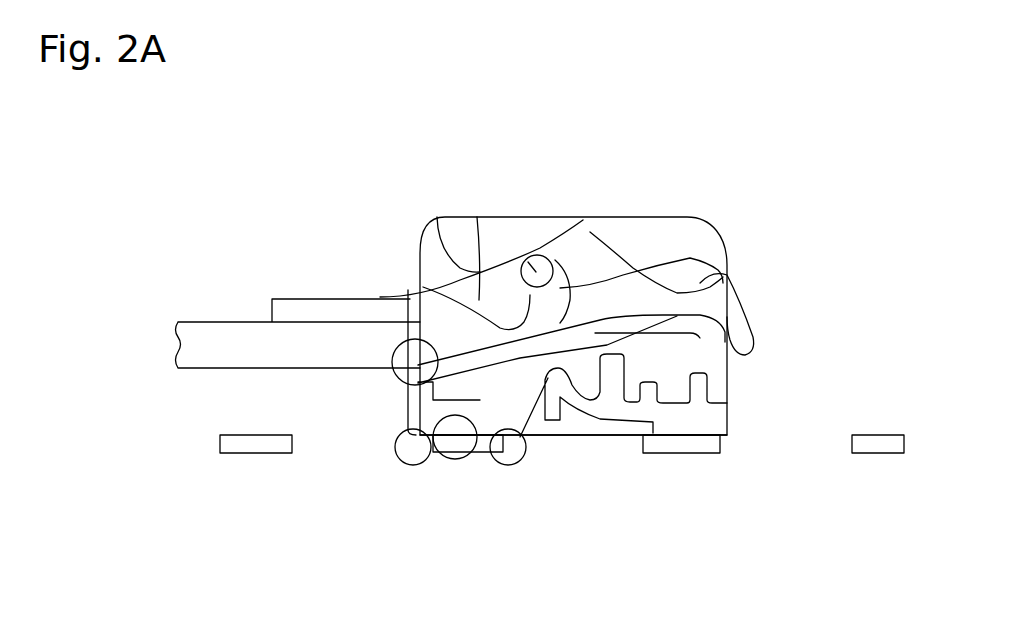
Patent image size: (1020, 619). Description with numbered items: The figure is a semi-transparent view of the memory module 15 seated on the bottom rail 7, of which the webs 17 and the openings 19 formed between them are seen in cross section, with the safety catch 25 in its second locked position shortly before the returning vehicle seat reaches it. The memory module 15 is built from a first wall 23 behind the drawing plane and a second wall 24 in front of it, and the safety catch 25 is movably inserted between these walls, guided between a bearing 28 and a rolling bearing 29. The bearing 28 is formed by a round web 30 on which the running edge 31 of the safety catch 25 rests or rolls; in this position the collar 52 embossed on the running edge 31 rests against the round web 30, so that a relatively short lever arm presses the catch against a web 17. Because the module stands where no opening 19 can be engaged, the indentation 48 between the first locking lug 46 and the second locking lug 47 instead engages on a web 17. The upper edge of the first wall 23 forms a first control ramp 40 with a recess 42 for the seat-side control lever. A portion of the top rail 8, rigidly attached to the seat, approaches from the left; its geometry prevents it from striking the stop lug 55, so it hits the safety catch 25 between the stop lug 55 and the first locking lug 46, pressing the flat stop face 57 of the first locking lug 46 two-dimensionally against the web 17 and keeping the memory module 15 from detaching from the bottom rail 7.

The bottom rail 7 is at (889, 385).
The top rail 8 is at (297, 295).
The memory module 15 is at (536, 187).
The webs 17 is at (257, 440).
The openings 19 is at (553, 450).
The first wall 23 is at (652, 215).
The second wall 24 is at (590, 220).
The safety catch 25 is at (418, 403).
The bearing 28 is at (593, 265).
The rolling bearing 29 is at (617, 440).
The round web 30 is at (522, 240).
The running edge 31 is at (476, 217).
The first control ramp 40 is at (437, 217).
The recess 42 is at (725, 292).
The first locking lug 46 is at (415, 457).
The second locking lug 47 is at (520, 450).
The indentation 48 is at (460, 463).
The collar 52 is at (563, 218).
The stop lug 55 is at (400, 290).
The flat stop face 57 is at (427, 477).